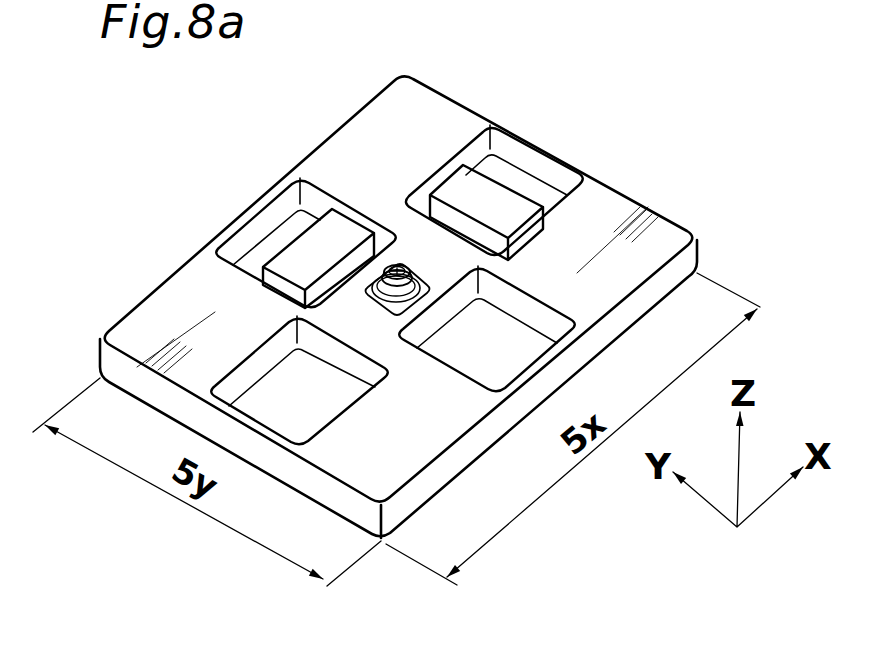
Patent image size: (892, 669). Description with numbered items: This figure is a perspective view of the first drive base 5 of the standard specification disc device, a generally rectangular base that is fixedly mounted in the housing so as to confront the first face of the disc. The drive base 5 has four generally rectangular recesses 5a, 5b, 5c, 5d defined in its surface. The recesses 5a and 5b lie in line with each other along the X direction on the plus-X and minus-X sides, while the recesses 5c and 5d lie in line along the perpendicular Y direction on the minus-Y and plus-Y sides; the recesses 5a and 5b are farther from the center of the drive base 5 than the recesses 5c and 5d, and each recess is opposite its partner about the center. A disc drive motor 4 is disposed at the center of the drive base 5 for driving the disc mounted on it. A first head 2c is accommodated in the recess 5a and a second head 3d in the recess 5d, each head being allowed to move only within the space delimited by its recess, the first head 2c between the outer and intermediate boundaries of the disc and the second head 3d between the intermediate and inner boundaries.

The first drive base 5 is at (428, 110).
The recess 5a is at (553, 170).
The recess 5b is at (288, 428).
The recess 5c is at (495, 378).
The recess 5d is at (253, 227).
The first head 2c is at (480, 187).
The second head 3d is at (303, 250).
The disc drive motor 4 is at (414, 277).